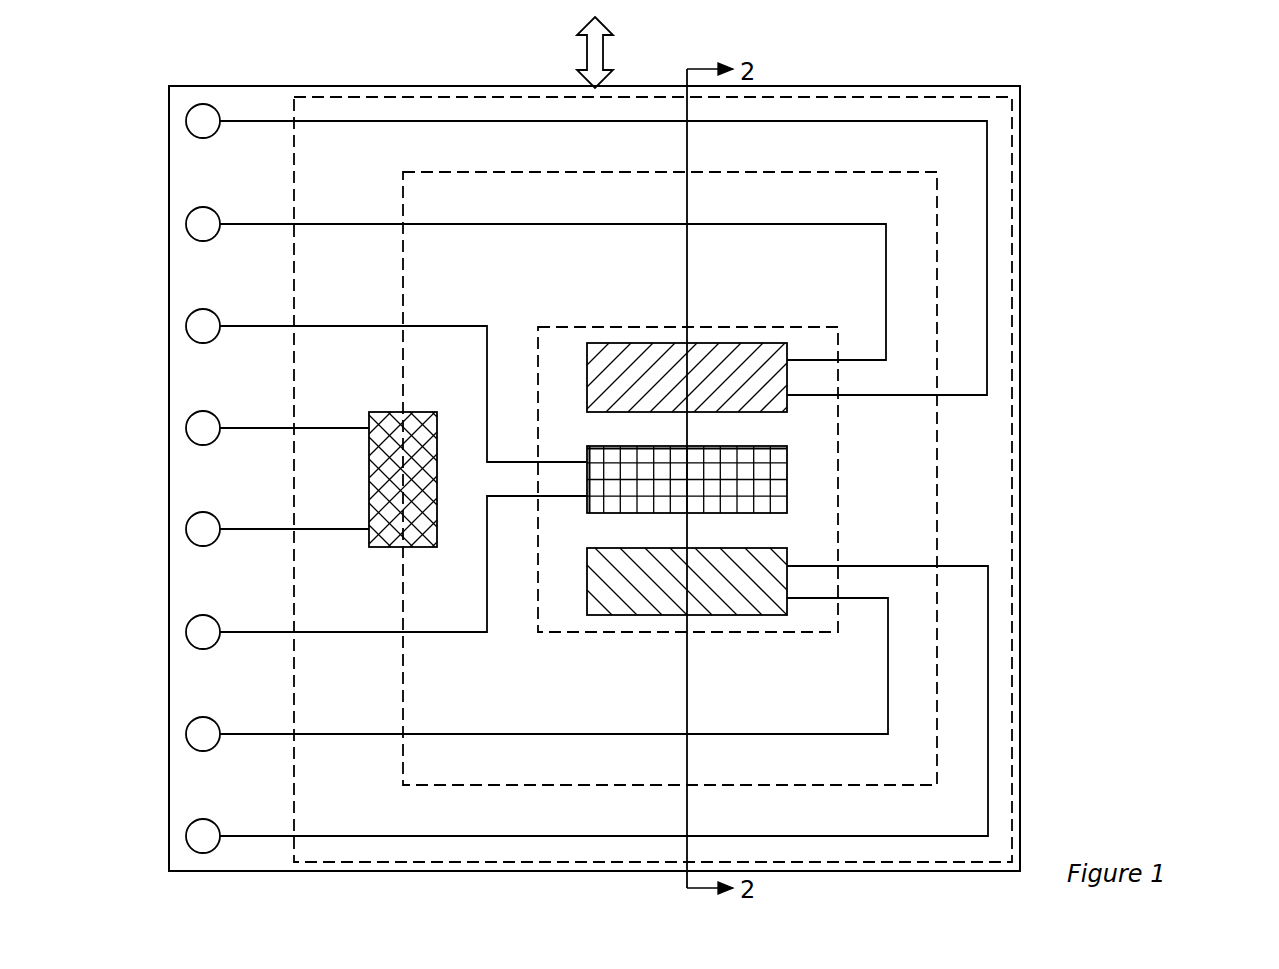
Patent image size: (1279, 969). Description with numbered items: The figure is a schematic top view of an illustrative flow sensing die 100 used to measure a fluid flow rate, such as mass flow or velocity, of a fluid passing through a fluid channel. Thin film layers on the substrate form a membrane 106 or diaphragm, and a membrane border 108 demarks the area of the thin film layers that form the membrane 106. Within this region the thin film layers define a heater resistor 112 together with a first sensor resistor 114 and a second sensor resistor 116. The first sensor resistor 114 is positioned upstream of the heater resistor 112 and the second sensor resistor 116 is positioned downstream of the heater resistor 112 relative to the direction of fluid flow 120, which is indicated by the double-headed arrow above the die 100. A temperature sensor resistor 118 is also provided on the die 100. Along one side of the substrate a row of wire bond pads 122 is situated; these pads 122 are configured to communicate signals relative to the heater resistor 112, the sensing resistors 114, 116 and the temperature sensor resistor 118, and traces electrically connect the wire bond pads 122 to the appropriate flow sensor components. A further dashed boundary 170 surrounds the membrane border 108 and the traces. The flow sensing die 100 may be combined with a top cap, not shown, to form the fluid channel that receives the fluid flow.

The flow sensing die 100 is at (1060, 73).
The membrane 106 is at (812, 530).
The membrane border 108 is at (837, 428).
The heater resistor 112 is at (785, 465).
The first sensor resistor 114 is at (737, 607).
The second sensor resistor 116 is at (727, 355).
The temperature sensor resistor 118 is at (392, 483).
The direction of fluid flow 120 is at (586, 53).
The wire bond pads 122 is at (200, 224).
The outer encapsulation region 170 is at (937, 237).